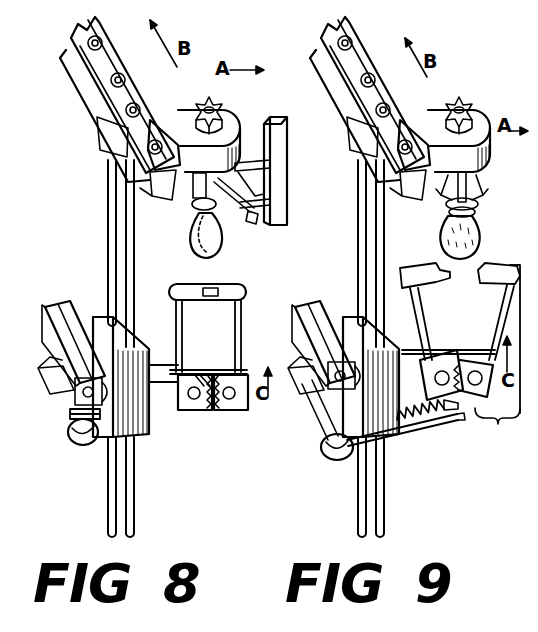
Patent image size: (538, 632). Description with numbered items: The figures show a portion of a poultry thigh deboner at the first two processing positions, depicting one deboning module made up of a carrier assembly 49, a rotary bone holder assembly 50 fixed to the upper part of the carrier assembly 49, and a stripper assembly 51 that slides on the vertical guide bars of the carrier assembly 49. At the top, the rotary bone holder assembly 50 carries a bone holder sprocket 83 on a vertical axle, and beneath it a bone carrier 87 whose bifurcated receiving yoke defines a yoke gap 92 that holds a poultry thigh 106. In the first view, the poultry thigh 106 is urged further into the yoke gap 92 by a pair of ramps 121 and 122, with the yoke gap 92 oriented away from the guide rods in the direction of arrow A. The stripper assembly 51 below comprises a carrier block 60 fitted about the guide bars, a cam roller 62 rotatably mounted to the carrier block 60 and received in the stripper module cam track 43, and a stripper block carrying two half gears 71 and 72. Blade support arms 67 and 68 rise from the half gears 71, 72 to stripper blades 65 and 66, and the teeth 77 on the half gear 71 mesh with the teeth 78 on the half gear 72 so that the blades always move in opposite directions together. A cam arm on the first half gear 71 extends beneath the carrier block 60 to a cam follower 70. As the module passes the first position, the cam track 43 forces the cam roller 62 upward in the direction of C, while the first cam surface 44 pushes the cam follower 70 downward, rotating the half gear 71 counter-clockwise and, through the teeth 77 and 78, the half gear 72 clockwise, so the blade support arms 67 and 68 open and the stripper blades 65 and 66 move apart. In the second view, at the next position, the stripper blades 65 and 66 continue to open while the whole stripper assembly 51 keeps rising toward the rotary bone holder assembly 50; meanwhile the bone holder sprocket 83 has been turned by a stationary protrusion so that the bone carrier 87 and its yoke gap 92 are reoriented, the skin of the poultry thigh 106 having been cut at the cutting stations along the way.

In FIG. 8, the carrier assembly 49 is at (78, 108).
In FIG. 9, the rotary bone holder assembly 50 is at (462, 80).
In FIG. 8, the stripper module cam track 43 is at (66, 300).
In FIG. 9, the stripper module cam track 43 is at (318, 294).
In FIG. 8, the first cam surface 44 is at (68, 420).
In FIG. 9, the first cam surface 44 is at (330, 433).
In FIG. 9, the stripper assembly 51 is at (497, 355).
In FIG. 8, the carrier block 60 is at (143, 442).
In FIG. 9, the carrier block 60 is at (395, 436).
In FIG. 8, the cam roller 62 is at (66, 405).
In FIG. 9, the cam roller 62 is at (328, 418).
In FIG. 8, the stripper blade 65 is at (182, 287).
In FIG. 9, the stripper blade 65 is at (426, 268).
In FIG. 8, the stripper blade 66 is at (227, 285).
In FIG. 9, the stripper blade 66 is at (494, 268).
In FIG. 8, the blade support arm 67 is at (181, 325).
In FIG. 8, the blade support arm 68 is at (240, 325).
In FIG. 8, the cam follower 70 is at (88, 446).
In FIG. 9, the cam follower 70 is at (323, 458).
In FIG. 8, the half gear 71 is at (185, 373).
In FIG. 8, the half gear 72 is at (243, 387).
In FIG. 8, the teeth 77 is at (203, 409).
In FIG. 8, the teeth 78 is at (224, 410).
In FIG. 9, the bone holder sprocket 83 is at (476, 110).
In FIG. 9, the bone carrier 87 is at (479, 206).
In FIG. 9, the yoke gap 92 is at (482, 189).
In FIG. 8, the poultry thigh 106 is at (188, 228).
In FIG. 8, the ramp 121 is at (247, 160).
In FIG. 8, the ramp 122 is at (254, 224).